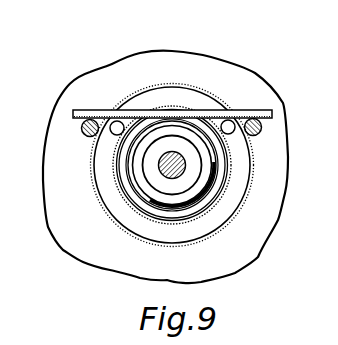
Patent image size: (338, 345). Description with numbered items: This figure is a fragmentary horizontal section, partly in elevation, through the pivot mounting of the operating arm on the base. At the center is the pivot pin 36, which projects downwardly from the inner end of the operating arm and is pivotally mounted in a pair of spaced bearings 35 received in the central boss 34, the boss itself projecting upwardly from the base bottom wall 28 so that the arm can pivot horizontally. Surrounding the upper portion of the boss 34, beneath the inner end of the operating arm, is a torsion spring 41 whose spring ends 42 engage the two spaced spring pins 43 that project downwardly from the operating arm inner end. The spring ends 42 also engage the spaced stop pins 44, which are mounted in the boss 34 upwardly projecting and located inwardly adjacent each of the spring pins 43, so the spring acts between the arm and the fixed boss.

The base bottom wall 28 is at (155, 58).
The central boss 34 is at (211, 222).
The bearings 35 is at (152, 193).
The pivot pin 36 is at (184, 171).
The torsion spring 41 is at (123, 188).
The spring ends 42 is at (90, 110).
The spring pins 43 is at (84, 133).
The stop pins 44 is at (116, 134).